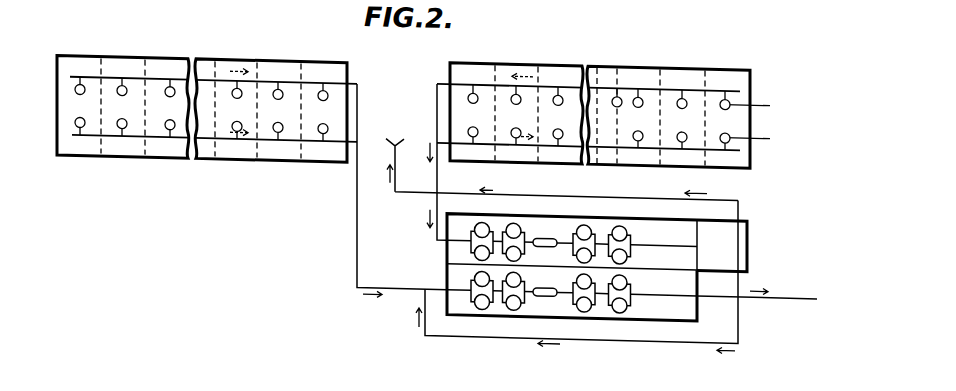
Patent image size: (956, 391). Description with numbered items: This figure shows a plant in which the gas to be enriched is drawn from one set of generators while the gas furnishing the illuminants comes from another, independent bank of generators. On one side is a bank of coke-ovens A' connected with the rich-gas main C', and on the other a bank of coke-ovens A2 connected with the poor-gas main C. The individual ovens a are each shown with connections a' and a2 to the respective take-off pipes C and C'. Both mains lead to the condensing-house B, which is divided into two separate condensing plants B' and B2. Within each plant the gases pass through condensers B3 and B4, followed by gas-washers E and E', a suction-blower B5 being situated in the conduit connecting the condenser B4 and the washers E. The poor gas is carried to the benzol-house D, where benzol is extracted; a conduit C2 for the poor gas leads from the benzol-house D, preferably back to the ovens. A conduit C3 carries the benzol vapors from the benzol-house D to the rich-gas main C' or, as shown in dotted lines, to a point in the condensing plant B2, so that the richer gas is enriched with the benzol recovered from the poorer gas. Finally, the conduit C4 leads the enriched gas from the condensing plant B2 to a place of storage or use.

The individual oven a is at (406, 86).
The oven connection a' is at (417, 68).
The oven connection a2 is at (78, 124).
The bank of coke-ovens A' is at (202, 94).
The bank of coke-ovens A2 is at (600, 101).
The condensing-house B is at (555, 267).
The condensing plant B' is at (572, 229).
The condensing plant B2 is at (572, 306).
The condenser B3 is at (474, 217).
The condenser B4 is at (513, 210).
The suction-blower B5 is at (550, 223).
The poor-gas main C is at (446, 162).
The rich-gas main C' is at (382, 191).
The poor-gas conduit C2 is at (400, 186).
The benzol-vapor conduit C3 is at (653, 325).
The enriched-gas conduit C4 is at (773, 279).
The benzol-house D is at (733, 246).
The gas-washer E is at (587, 268).
The gas-washer E' is at (626, 269).